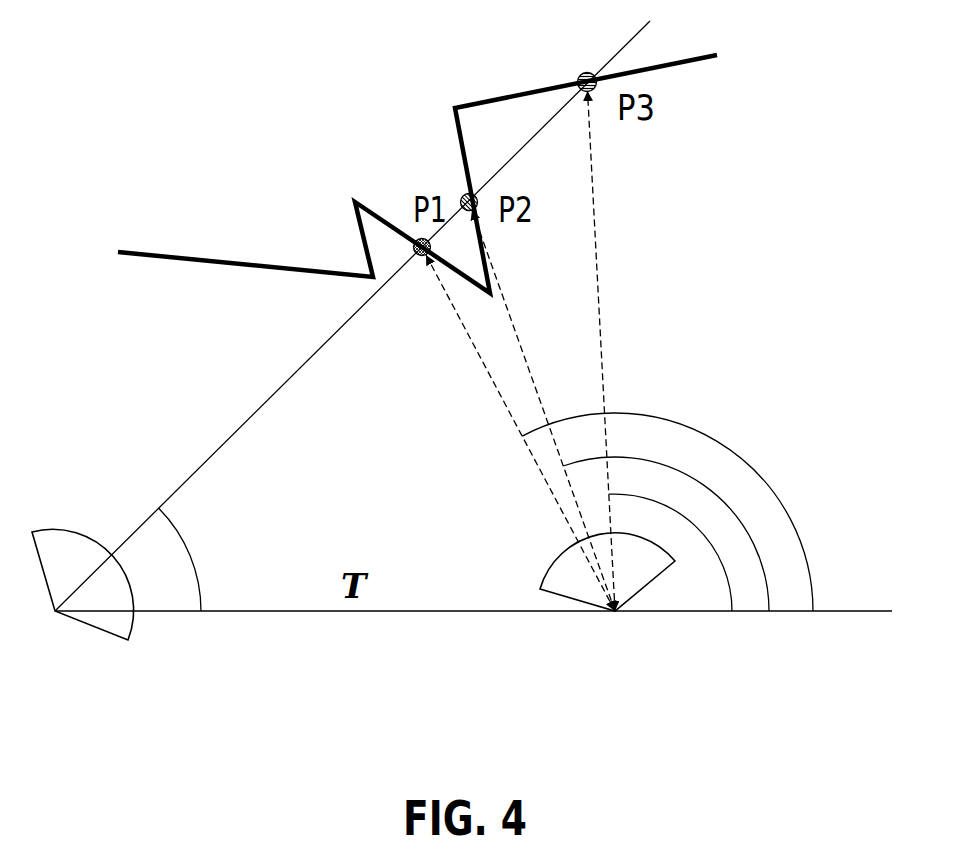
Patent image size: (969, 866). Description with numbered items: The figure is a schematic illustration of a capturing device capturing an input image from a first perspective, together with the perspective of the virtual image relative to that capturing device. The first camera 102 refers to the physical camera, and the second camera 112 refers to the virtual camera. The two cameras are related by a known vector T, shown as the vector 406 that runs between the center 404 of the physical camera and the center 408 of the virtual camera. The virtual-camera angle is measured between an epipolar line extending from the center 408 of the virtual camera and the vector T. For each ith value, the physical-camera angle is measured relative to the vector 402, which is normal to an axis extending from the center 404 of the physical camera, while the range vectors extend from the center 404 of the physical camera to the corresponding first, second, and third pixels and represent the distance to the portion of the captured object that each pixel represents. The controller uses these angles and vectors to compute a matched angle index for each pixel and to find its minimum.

The first camera 102 is at (650, 570).
The second camera 112 is at (112, 632).
The vector normal to an axis extending from the center of the physical camera 402 is at (838, 613).
The center of the physical camera 404 is at (616, 614).
The known vector T 406 is at (248, 613).
The center of the virtual camera 408 is at (56, 614).